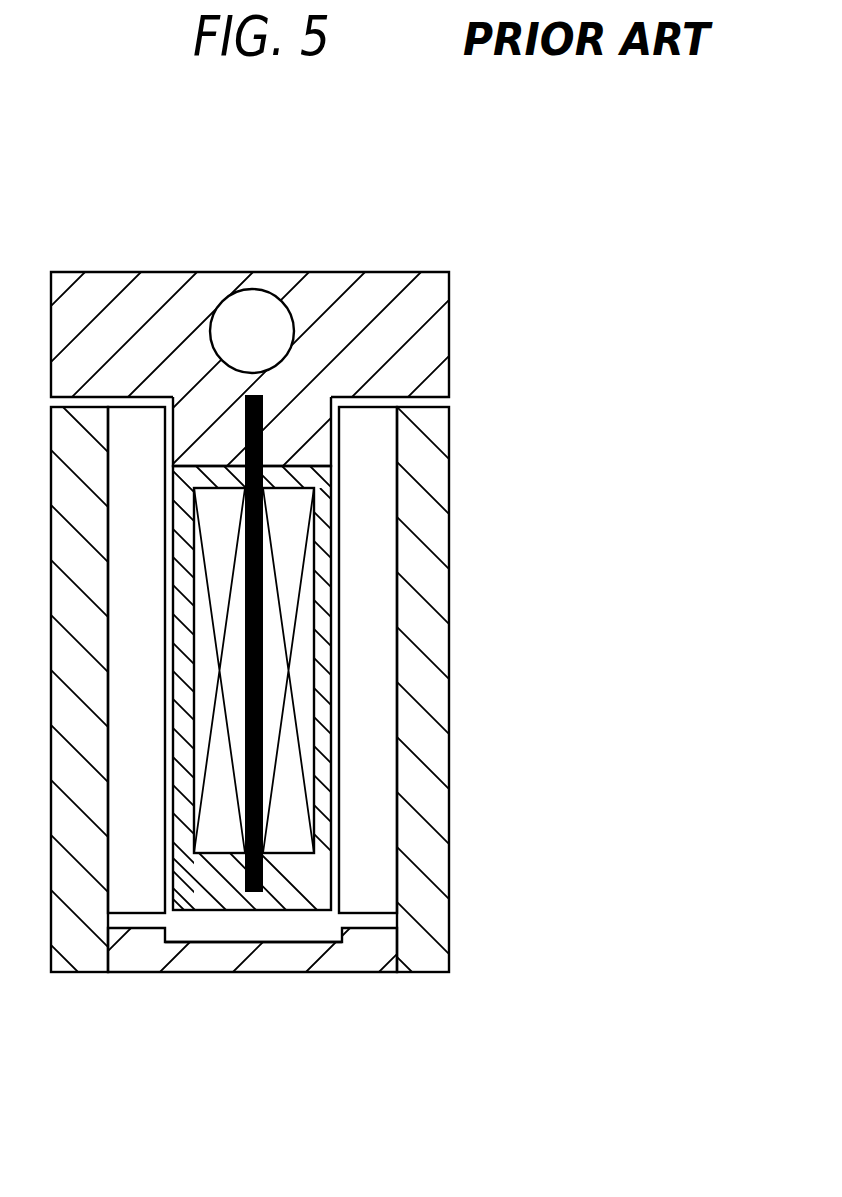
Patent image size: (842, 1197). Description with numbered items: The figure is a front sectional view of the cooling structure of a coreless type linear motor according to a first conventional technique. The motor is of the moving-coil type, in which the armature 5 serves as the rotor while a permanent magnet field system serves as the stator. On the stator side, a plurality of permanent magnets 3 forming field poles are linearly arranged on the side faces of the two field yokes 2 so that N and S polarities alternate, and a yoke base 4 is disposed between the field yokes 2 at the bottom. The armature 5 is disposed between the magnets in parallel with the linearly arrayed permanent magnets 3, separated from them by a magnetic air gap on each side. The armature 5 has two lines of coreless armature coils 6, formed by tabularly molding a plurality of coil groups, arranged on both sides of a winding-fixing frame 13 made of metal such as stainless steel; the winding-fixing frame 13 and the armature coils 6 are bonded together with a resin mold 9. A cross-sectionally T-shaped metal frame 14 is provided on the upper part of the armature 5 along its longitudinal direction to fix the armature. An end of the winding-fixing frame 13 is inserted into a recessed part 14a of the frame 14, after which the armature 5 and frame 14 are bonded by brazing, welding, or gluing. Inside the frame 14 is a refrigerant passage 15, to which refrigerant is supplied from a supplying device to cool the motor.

The field yoke 2 is at (430, 637).
The permanent magnet 3 is at (368, 578).
The yoke base 4 is at (350, 960).
The armature 5 is at (225, 930).
The armature coil 6 is at (287, 818).
The resin mold 9 is at (303, 873).
The winding-fixing frame 13 is at (263, 705).
The frame 14 is at (388, 272).
The recessed part 14a is at (262, 448).
The refrigerant passage 15 is at (285, 332).